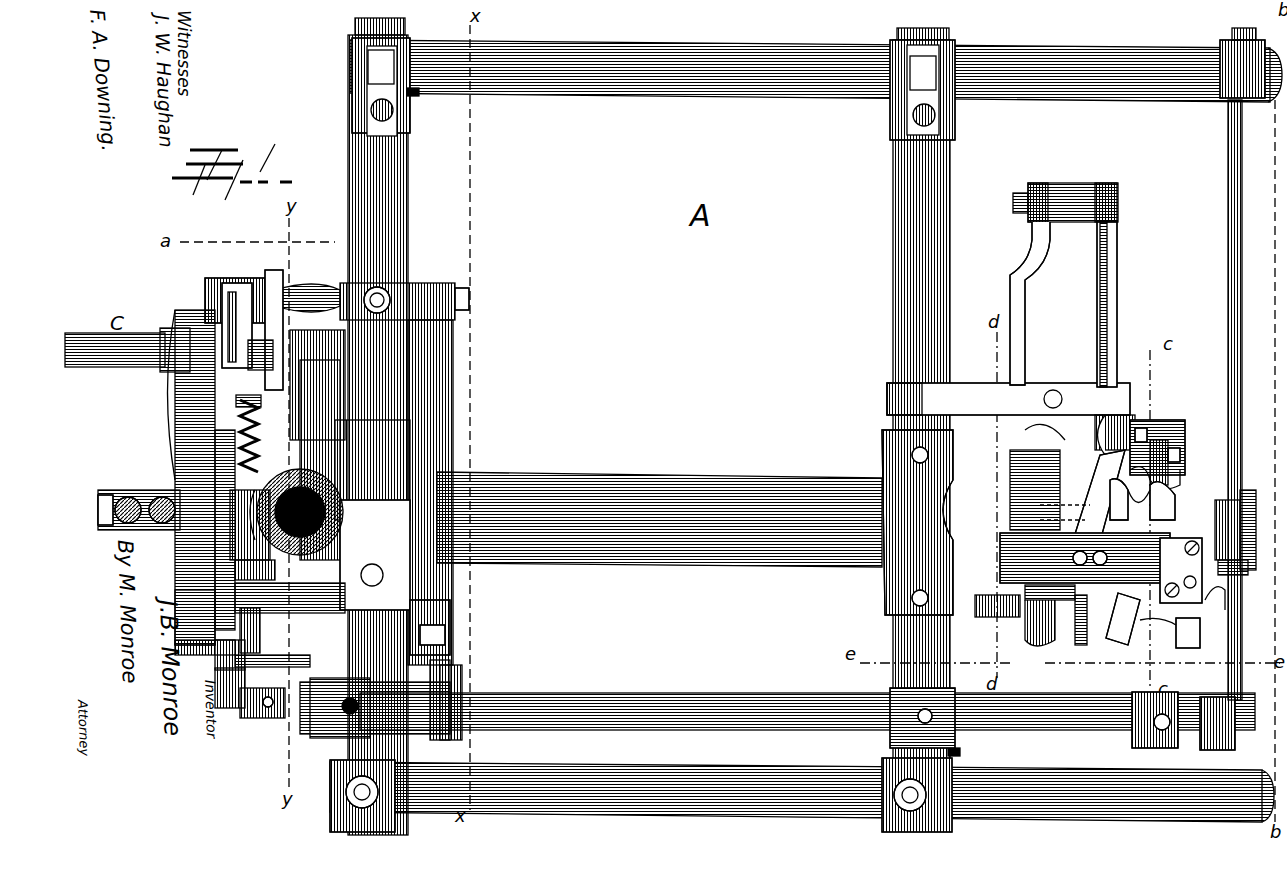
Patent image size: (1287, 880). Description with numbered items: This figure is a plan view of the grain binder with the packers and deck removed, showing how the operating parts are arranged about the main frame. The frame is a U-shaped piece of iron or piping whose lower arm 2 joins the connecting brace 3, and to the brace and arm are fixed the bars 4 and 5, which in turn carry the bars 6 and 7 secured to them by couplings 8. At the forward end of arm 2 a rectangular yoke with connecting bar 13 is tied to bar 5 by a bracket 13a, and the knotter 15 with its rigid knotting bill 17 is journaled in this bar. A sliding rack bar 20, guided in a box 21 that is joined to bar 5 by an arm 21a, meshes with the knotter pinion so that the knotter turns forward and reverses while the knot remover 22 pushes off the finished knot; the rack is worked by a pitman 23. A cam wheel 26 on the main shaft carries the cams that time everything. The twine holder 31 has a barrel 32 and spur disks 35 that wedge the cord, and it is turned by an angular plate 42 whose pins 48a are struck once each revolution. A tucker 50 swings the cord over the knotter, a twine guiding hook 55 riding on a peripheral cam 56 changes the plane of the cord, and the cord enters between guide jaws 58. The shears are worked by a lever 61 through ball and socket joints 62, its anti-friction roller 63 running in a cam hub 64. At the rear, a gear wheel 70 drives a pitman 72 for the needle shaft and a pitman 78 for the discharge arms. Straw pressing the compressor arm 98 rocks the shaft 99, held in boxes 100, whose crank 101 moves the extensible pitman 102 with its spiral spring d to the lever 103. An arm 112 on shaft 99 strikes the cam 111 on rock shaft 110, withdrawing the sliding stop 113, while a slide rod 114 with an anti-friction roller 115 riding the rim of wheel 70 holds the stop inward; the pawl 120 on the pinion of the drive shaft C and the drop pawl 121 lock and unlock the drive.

The lower arm 2 is at (659, 510).
The connecting brace 3 is at (286, 526).
The bar 4 is at (383, 426).
The bar 5 is at (924, 430).
The bar 6 is at (720, 93).
The bar 7 is at (640, 764).
The couplings 8 is at (418, 92).
The connecting bar 13 is at (1085, 559).
The bracket 13a is at (882, 585).
The knotter 15 is at (1125, 560).
The knotting bill 17 is at (1181, 570).
The sliding rack bar 20 is at (1114, 334).
The box 21 is at (1118, 425).
The arm 21a is at (1008, 399).
The knot remover 22 is at (1181, 567).
The pitman 23 is at (1022, 322).
The cam wheel 26 is at (1037, 477).
The twine holder 31 is at (1168, 479).
The barrel 32 is at (1170, 450).
The spur wheels or disks 35 is at (1139, 499).
The angular plate 42 is at (1180, 422).
The pins 48a is at (1145, 430).
The tucker 50 is at (1093, 512).
The twine guiding hook 55 is at (1060, 540).
The peripheral cam 56 is at (1032, 626).
The guide jaws 58 is at (1142, 499).
The lever 61 is at (1220, 592).
The ball and socket joints 62 is at (1153, 629).
The anti-friction roller 63 is at (1244, 570).
The cam hub 64 is at (1250, 525).
The gear wheel 70 is at (176, 585).
The pitman 72 is at (160, 538).
The pitman 78 is at (124, 491).
The compressor arm 98 is at (1132, 695).
The rocking shaft 99 is at (807, 704).
The boxes 100 is at (327, 733).
The crank 101 is at (242, 718).
The pitman 102 is at (220, 652).
The lever 103 is at (236, 283).
The rock shaft 110 is at (437, 418).
The cam 111 is at (448, 656).
The arm 112 is at (463, 680).
The sliding stop 113 is at (300, 290).
The slide rod 114 is at (285, 614).
The anti-friction roller 115 is at (245, 555).
The pawl 120 is at (266, 330).
The drop pawl 121 is at (183, 392).
The drive shaft C is at (127, 350).
The spiral spring d is at (282, 418).